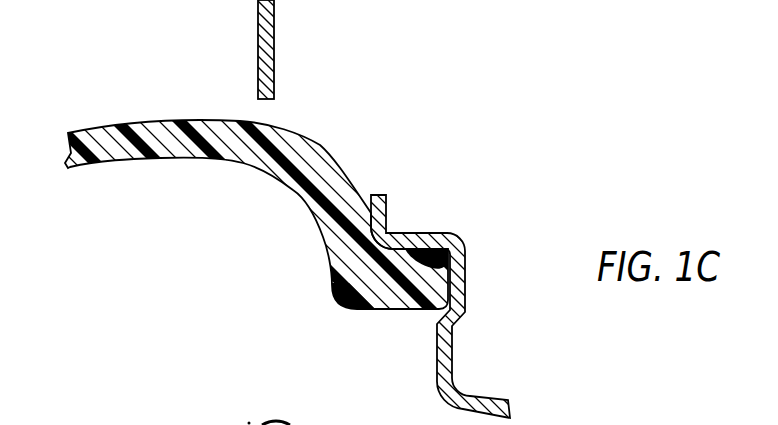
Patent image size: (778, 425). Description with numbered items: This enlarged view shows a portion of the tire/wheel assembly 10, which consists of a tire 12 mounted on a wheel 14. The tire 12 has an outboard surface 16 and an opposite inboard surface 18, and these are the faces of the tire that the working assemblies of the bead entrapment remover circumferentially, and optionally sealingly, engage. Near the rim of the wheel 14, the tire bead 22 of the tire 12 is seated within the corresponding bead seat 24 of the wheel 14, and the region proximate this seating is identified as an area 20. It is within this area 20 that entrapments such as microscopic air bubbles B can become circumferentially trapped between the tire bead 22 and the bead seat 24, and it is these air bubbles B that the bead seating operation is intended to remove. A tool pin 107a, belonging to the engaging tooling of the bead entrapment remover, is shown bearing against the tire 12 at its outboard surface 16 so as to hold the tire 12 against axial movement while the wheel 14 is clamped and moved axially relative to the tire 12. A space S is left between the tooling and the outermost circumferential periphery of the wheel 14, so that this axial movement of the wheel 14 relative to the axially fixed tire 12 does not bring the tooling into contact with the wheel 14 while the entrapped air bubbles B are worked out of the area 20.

The tire/wheel assembly 10 is at (93, 61).
The tire 12 is at (92, 130).
The wheel 14 is at (453, 360).
The outboard surface 16 is at (389, 212).
The inboard surface 18 is at (292, 132).
The area 20 is at (403, 203).
The tire bead 22 is at (366, 281).
The bead seat 24 is at (466, 262).
The tool pin 107a is at (258, 52).
The space S is at (394, 150).
The air bubbles B is at (416, 250).